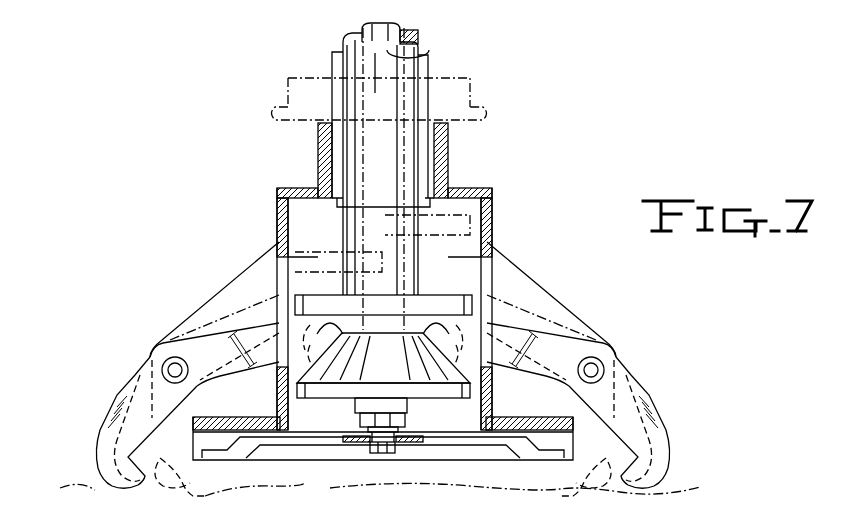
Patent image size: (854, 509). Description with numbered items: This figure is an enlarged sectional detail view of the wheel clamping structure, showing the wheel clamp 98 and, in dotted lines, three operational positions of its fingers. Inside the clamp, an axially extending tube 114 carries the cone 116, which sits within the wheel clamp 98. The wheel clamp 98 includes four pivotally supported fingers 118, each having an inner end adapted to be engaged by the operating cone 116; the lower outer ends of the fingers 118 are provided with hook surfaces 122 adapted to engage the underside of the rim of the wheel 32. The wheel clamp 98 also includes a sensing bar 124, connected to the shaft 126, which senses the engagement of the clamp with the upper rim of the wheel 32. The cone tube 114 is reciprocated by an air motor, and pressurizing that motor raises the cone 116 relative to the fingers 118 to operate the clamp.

The wheel clamp 98 is at (492, 190).
The tube 114 is at (425, 43).
The shaft 126 is at (362, 30).
The cone 116 is at (334, 398).
The fingers 118 is at (112, 423).
The hook surfaces 122 is at (107, 480).
The sensing bar 124 is at (317, 442).
The wheel 32 is at (562, 497).